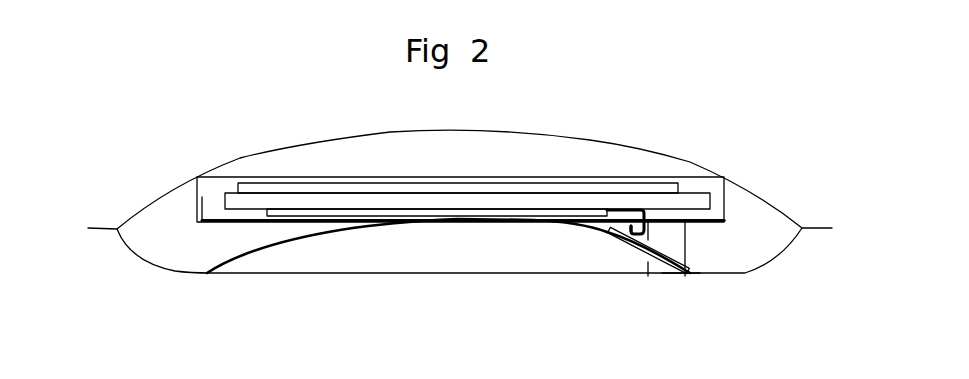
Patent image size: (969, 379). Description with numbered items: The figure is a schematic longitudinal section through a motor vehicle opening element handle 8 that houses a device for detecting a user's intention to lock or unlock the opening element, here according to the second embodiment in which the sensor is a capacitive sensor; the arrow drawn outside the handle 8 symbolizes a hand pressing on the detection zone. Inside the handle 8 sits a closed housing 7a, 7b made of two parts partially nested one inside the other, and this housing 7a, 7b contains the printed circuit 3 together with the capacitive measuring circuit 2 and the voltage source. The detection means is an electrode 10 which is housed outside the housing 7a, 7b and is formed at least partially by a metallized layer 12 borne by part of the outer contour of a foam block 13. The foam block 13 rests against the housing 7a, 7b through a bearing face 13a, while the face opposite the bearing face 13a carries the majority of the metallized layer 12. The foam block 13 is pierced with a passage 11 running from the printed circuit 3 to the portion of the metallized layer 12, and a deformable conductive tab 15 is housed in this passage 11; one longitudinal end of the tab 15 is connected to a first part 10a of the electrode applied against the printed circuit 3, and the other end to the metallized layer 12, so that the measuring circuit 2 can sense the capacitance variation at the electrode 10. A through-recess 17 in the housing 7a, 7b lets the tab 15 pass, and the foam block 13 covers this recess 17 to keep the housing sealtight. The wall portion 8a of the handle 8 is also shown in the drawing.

The opening element handle 8 is at (210, 147).
The housing 7a is at (220, 221).
The housing 7b is at (279, 178).
The capacitive measuring circuit 2 is at (363, 188).
The printed circuit 3 is at (457, 200).
The first part of the electrode 10a is at (407, 213).
The electrode 10 is at (690, 275).
The lower wall portion 8a is at (638, 240).
The passage 11 is at (613, 220).
The deformable and conductive tab 15 is at (630, 224).
The through-recess 17 is at (647, 210).
The foam block 13 is at (665, 238).
The bearing face 13a is at (672, 221).
The metallized layer 12 is at (677, 255).